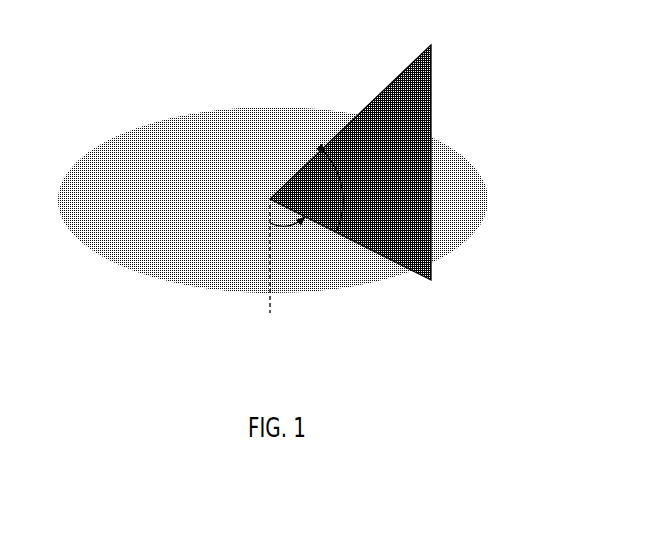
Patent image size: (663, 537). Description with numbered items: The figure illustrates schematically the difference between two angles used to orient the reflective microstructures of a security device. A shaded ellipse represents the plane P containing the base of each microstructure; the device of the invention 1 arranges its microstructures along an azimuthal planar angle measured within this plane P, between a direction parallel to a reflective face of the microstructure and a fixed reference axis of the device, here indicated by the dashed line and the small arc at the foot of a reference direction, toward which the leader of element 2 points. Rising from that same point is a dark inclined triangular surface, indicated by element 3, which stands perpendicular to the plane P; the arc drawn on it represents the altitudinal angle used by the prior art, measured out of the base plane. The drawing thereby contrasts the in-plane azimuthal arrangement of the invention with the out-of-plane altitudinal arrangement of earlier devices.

The device of the invention 1 is at (207, 181).
The azimuth angle direction 2 is at (303, 244).
The inclined plane 3 is at (368, 171).